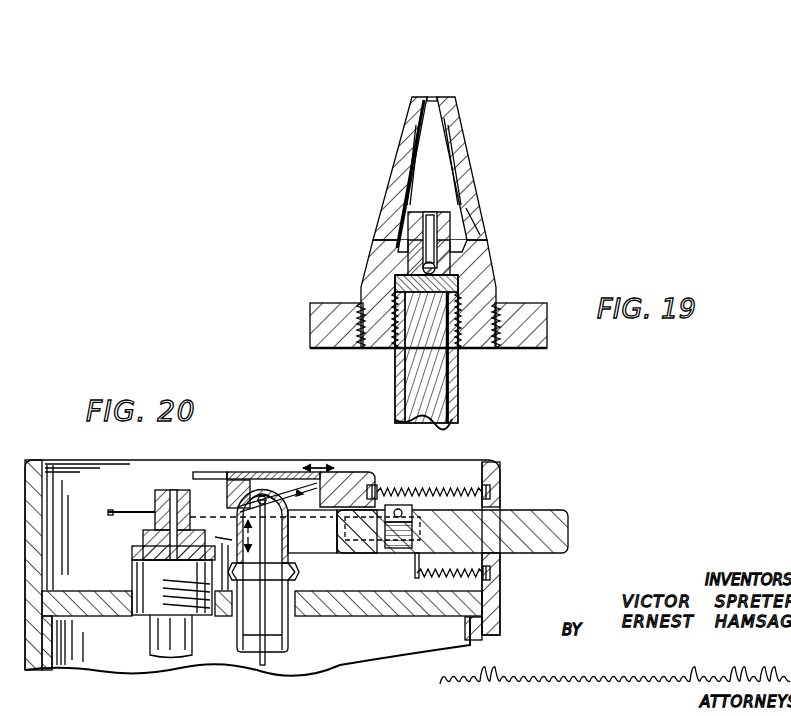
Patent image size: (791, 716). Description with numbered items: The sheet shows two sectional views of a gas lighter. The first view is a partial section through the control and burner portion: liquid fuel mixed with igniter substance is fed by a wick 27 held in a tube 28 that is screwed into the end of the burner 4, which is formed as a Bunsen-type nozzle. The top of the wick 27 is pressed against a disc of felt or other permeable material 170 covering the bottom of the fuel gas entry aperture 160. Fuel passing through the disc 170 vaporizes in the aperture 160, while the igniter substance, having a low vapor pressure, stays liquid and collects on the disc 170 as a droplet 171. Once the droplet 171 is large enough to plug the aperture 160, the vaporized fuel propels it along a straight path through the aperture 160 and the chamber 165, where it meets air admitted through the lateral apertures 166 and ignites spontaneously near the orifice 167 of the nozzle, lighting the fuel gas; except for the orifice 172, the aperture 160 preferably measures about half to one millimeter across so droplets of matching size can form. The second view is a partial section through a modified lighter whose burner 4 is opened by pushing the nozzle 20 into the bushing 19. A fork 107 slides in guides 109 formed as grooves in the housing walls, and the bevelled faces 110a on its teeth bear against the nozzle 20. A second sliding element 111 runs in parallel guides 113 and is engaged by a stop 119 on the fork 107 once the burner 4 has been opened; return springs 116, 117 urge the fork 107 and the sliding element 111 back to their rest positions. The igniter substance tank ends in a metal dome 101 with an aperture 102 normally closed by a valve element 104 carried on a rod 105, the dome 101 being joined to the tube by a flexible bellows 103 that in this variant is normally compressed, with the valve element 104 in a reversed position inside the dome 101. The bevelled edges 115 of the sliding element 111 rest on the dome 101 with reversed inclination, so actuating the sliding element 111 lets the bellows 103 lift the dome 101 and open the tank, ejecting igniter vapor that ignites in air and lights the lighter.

In FIG. 19, the orifice of the nozzle 167 is at (433, 96).
In FIG. 19, the chamber 165 is at (440, 140).
In FIG. 19, the lateral apertures 166 is at (480, 222).
In FIG. 19, the orifice 172 is at (430, 214).
In FIG. 19, the fuel gas entry aperture 160 is at (423, 240).
In FIG. 19, the droplet 171 is at (423, 268).
In FIG. 19, the disc of felt or permeable material 170 is at (460, 282).
In FIG. 19, the tube 28 is at (395, 386).
In FIG. 19, the wick 27 is at (410, 415).
In FIG. 20, the nozzle 20 is at (162, 487).
In FIG. 20, the guides 113 is at (210, 473).
In FIG. 20, the metal dome 101 is at (263, 494).
In FIG. 20, the aperture 102 is at (258, 505).
In FIG. 20, the bevelled bottom side edges 115 is at (301, 466).
In FIG. 20, the sliding element 111 is at (350, 475).
In FIG. 20, the stop 119 is at (392, 504).
In FIG. 20, the return spring 117 is at (437, 490).
In FIG. 20, the fork 107 is at (537, 514).
In FIG. 20, the guides 109 is at (117, 510).
In FIG. 20, the burner 4 is at (129, 553).
In FIG. 20, the bushing 19 is at (150, 588).
In FIG. 20, the bevelled faces 110a is at (227, 548).
In FIG. 20, the valve element 104 is at (286, 530).
In FIG. 20, the flexible bellows 103 is at (294, 575).
In FIG. 20, the rod 105 is at (289, 638).
In FIG. 20, the return spring 116 is at (443, 575).